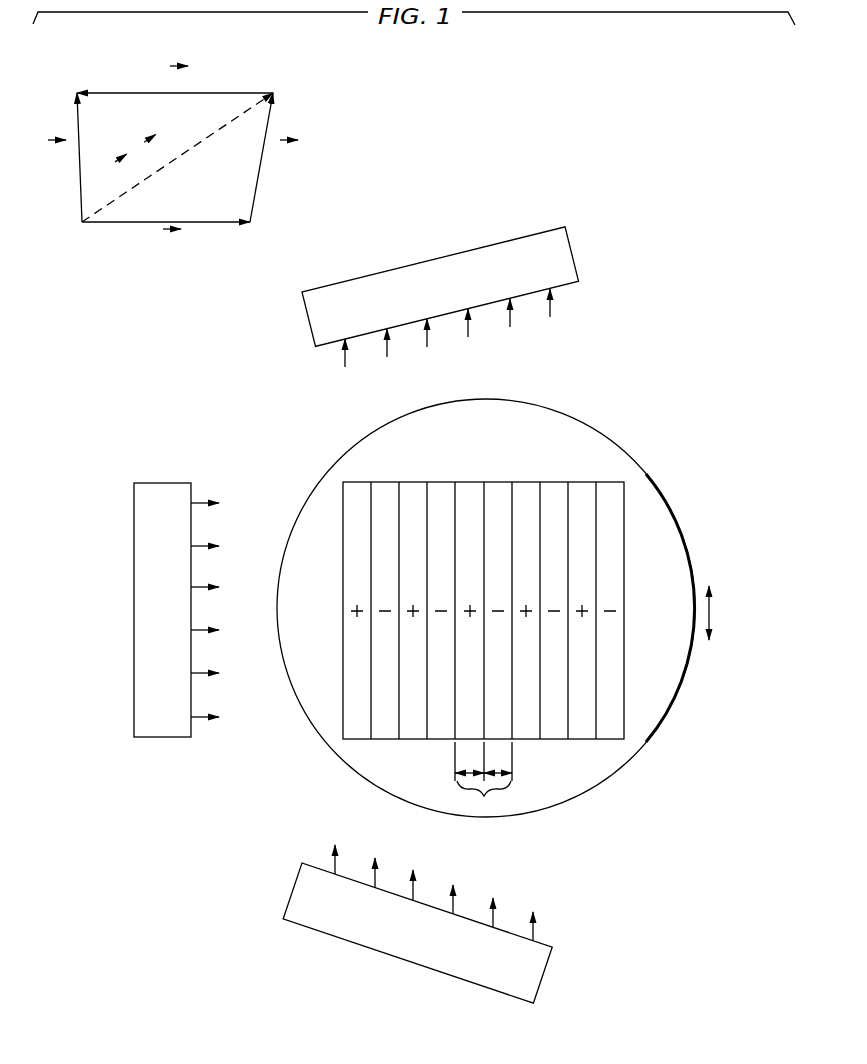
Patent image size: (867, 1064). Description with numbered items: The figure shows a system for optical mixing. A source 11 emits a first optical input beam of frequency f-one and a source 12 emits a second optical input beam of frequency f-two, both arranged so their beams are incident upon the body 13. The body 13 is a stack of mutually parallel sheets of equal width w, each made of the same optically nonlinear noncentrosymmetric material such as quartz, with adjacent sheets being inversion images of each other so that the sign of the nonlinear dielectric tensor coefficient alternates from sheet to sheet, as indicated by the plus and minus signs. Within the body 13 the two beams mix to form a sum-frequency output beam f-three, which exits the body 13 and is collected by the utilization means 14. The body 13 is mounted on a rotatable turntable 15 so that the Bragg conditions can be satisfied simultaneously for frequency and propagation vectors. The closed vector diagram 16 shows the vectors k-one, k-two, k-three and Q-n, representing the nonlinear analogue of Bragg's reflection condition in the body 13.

The source of first input optical beam 11 is at (153, 737).
The source of second optical input beam 12 is at (293, 886).
The body 13 is at (493, 482).
The utilization means 14 is at (306, 319).
The rotatable turntable 15 is at (652, 498).
The closed vector diagram 16 is at (251, 65).